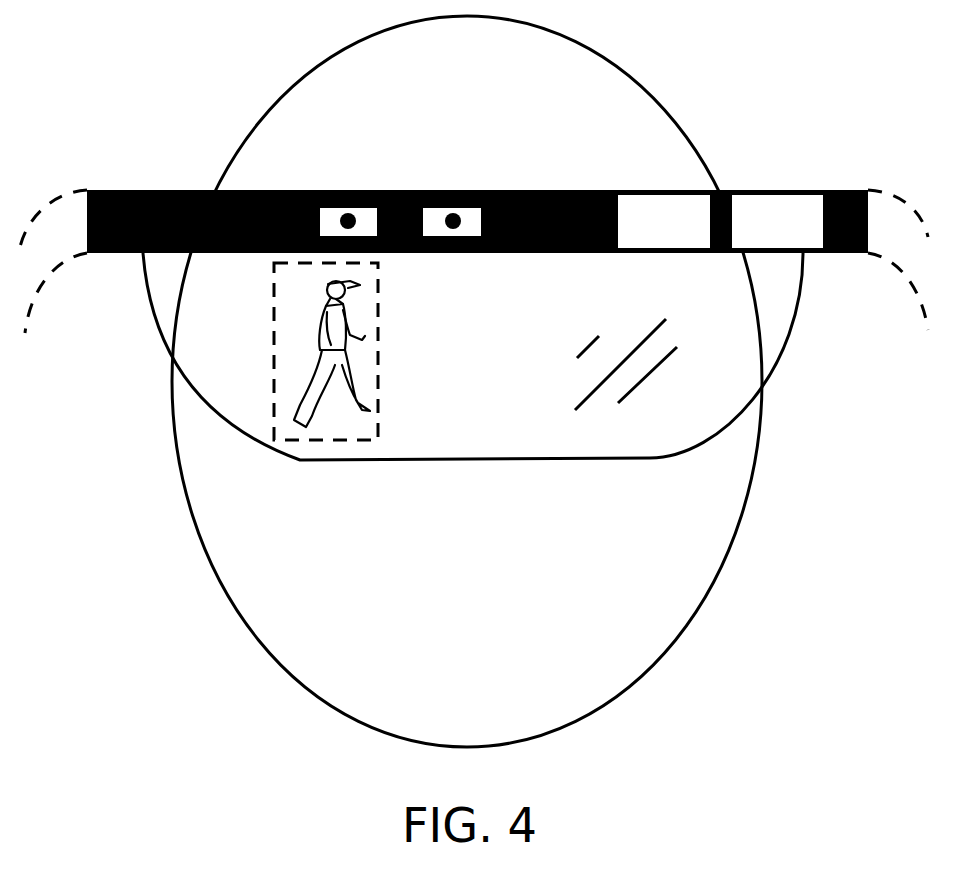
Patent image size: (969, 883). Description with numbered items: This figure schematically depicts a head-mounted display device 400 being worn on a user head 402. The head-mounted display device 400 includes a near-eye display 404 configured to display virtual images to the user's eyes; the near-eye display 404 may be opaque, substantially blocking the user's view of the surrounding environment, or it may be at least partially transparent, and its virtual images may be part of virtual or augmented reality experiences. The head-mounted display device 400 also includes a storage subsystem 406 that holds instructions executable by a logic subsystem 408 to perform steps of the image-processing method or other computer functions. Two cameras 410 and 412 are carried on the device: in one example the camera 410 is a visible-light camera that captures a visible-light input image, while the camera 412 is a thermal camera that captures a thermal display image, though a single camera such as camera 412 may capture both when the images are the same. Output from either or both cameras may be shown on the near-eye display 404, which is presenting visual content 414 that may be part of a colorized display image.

The head-mounted display device 400 is at (104, 158).
The user head 402 is at (306, 73).
The near-eye display 404 is at (193, 393).
The storage subsystem 406 is at (664, 221).
The logic subsystem 408 is at (777, 221).
The camera 410 is at (347, 208).
The camera 412 is at (452, 208).
The visual content 414 is at (379, 323).